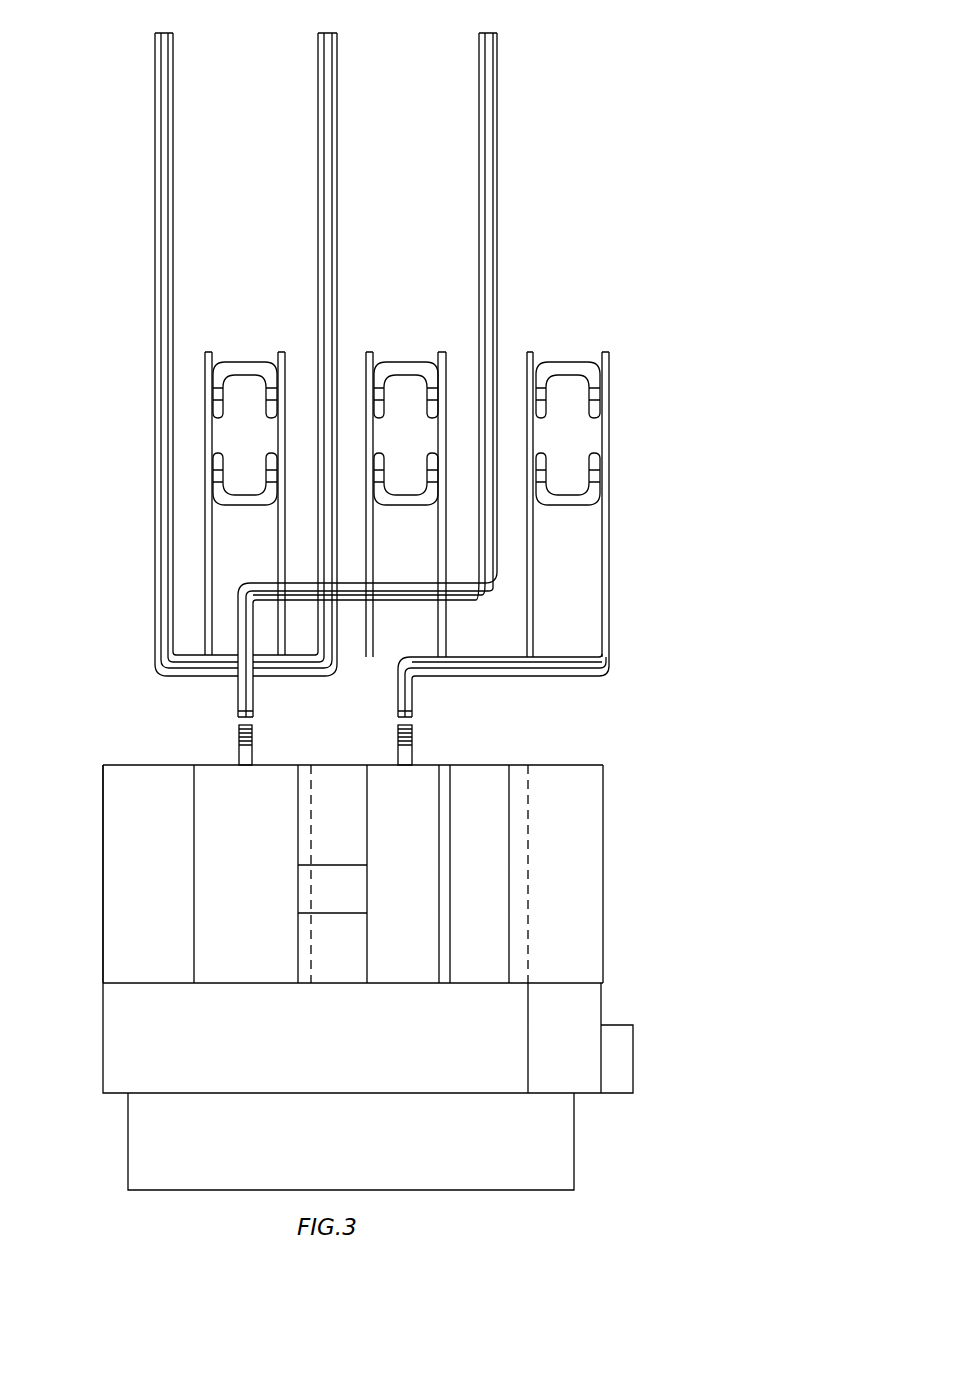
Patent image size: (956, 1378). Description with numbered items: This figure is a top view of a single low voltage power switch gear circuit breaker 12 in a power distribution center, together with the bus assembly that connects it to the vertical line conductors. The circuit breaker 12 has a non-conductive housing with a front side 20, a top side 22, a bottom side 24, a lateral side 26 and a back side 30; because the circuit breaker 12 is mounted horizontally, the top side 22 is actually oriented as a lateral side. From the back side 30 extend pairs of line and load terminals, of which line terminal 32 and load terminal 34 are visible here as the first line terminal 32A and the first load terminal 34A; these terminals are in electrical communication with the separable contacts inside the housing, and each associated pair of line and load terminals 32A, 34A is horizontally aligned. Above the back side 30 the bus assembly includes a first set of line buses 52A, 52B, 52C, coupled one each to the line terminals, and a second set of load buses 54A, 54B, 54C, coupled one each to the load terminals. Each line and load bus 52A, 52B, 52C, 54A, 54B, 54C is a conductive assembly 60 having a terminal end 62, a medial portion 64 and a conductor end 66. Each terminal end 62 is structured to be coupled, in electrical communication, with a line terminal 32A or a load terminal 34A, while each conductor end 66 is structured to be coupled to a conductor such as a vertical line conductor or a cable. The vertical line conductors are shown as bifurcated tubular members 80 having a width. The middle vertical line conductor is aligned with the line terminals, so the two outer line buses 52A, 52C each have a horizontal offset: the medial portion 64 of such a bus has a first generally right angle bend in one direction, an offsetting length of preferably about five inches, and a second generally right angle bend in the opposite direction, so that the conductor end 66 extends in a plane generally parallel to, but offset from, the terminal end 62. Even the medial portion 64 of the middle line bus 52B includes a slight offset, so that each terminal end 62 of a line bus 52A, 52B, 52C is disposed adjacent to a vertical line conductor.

The low voltage power switch gear circuit breaker 12 is at (115, 1020).
The front side 20 is at (555, 1190).
The top side 22 is at (603, 830).
The bottom side 24 is at (103, 897).
The lateral side 26 is at (103, 843).
The back side 30 is at (127, 765).
The line terminal 32 is at (405, 782).
The first line terminal 32A is at (413, 751).
The load terminal 34 is at (245, 782).
The first load terminal 34A is at (238, 745).
The first line bus 52A is at (284, 360).
The second line bus 52B is at (444, 360).
The third line bus 52C is at (612, 360).
The first load bus 54A is at (175, 36).
The second load bus 54B is at (338, 36).
The third load bus 54C is at (498, 36).
The conductive assembly 60 is at (160, 150).
The terminal end 62 is at (238, 690).
The medial portion 64 is at (310, 582).
The conductor end 66 is at (157, 46).
The bifurcated tubular member 80 is at (247, 506).